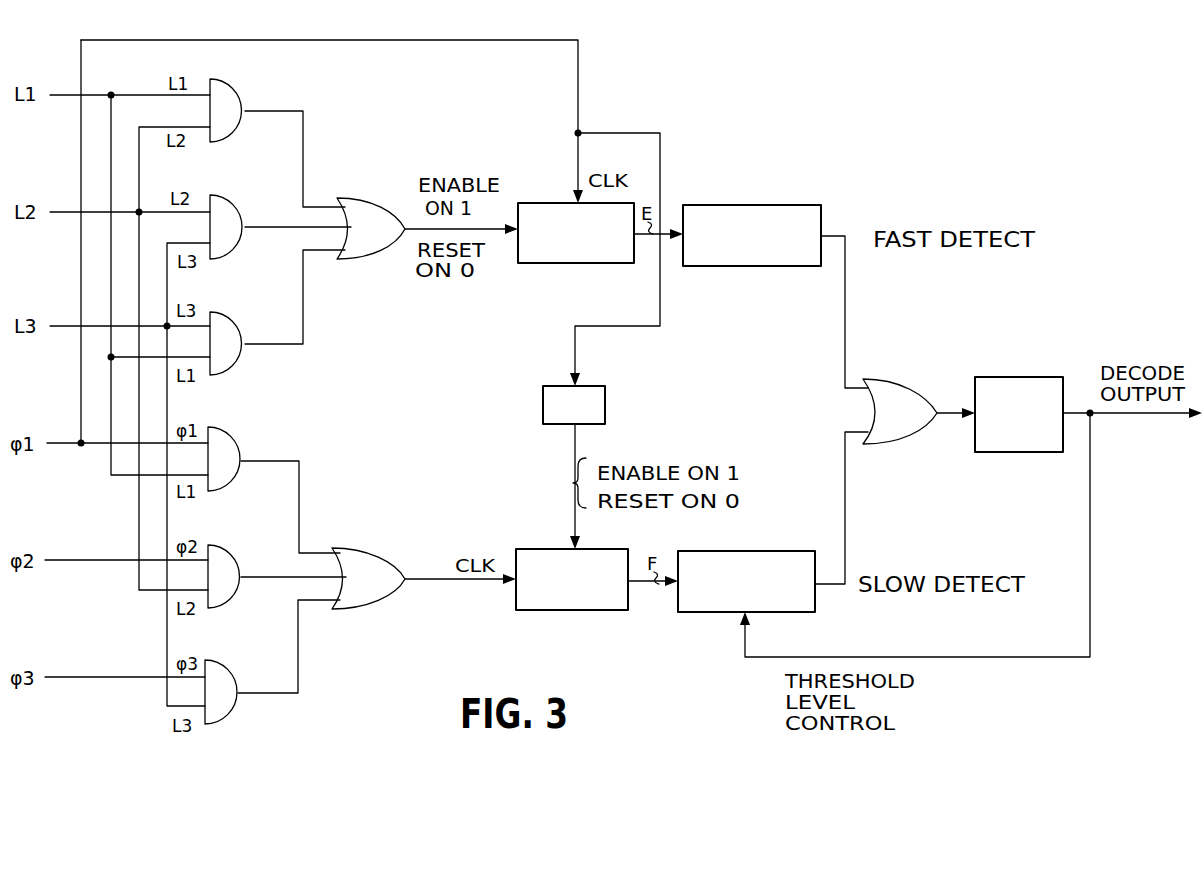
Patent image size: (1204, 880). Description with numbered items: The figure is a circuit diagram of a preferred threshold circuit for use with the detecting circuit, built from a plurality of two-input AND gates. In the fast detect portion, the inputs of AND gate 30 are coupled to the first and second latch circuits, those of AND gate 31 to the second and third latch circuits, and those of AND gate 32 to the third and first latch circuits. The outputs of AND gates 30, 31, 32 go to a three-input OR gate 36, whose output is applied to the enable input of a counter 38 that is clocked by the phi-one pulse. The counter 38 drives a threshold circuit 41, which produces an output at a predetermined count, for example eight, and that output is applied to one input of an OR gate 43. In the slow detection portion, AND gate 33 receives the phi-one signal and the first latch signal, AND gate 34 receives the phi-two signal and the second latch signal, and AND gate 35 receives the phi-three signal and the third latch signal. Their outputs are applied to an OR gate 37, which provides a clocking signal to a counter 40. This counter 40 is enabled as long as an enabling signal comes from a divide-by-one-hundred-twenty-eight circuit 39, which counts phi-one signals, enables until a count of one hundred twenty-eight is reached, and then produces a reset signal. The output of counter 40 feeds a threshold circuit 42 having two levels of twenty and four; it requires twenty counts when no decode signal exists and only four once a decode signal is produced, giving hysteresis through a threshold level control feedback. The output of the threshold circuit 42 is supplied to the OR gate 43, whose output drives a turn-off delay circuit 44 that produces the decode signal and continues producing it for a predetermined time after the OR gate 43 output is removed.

The AND gate 30 is at (243, 93).
The AND gate 31 is at (237, 208).
The AND gate 32 is at (240, 326).
The AND gate 33 is at (244, 445).
The AND gate 34 is at (241, 561).
The AND gate 35 is at (237, 676).
The OR gate 36 is at (366, 195).
The OR gate 37 is at (380, 549).
The counter 38 is at (556, 264).
The divide-by-128 circuit 39 is at (606, 394).
The counter 40 is at (553, 611).
The threshold circuit 41 is at (758, 204).
The threshold circuit 42 is at (704, 613).
The OR gate 43 is at (924, 379).
The turn-off delay circuit 44 is at (1015, 372).